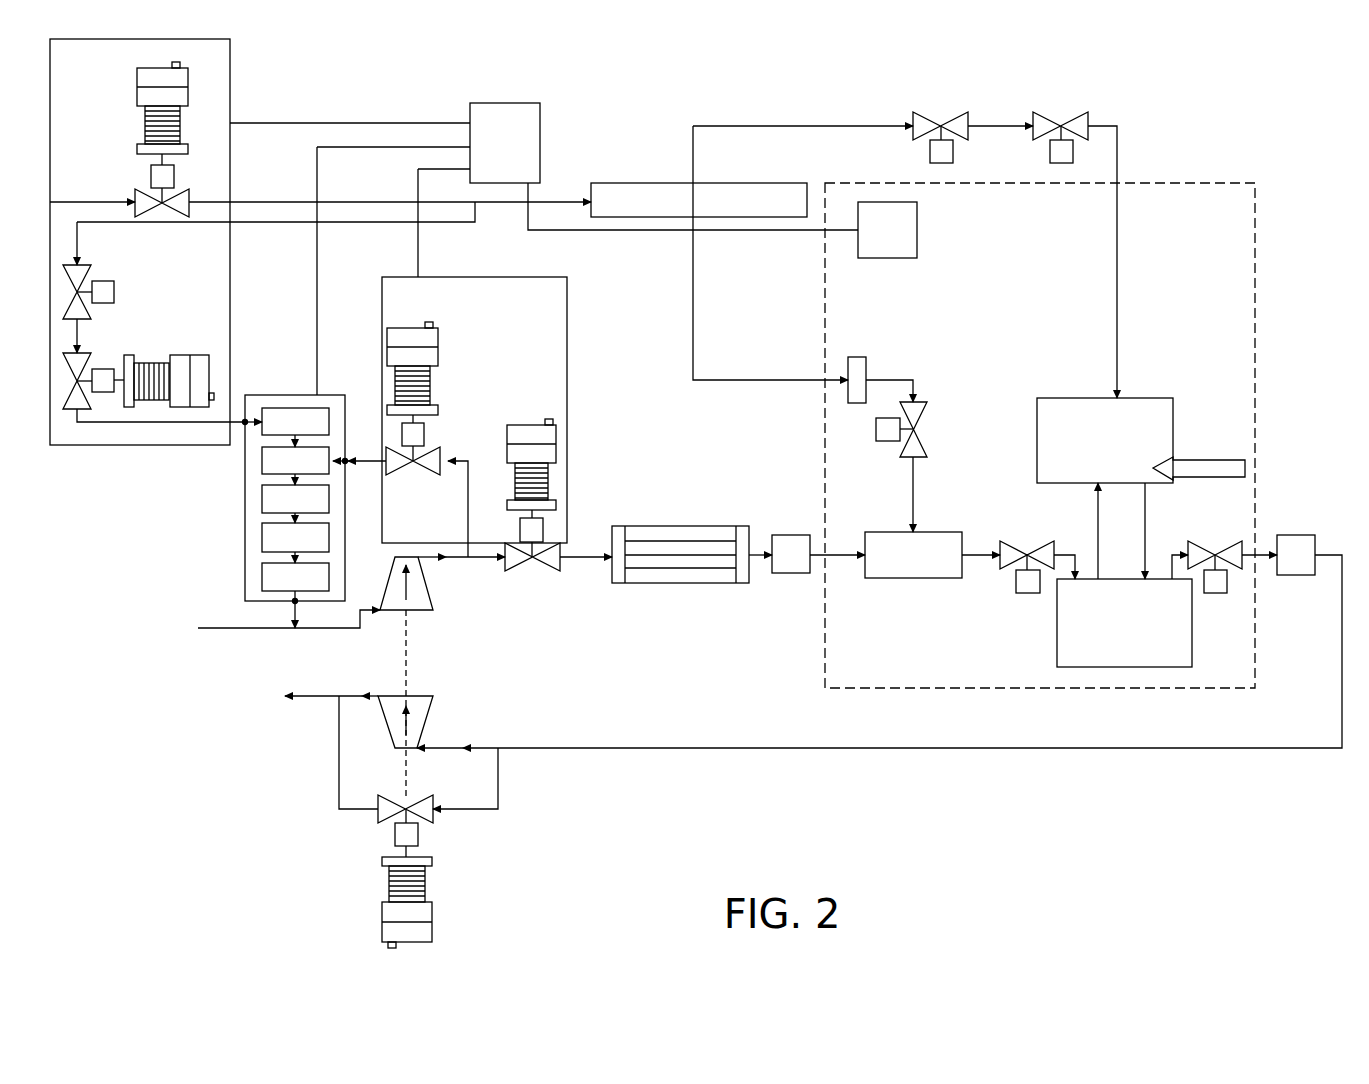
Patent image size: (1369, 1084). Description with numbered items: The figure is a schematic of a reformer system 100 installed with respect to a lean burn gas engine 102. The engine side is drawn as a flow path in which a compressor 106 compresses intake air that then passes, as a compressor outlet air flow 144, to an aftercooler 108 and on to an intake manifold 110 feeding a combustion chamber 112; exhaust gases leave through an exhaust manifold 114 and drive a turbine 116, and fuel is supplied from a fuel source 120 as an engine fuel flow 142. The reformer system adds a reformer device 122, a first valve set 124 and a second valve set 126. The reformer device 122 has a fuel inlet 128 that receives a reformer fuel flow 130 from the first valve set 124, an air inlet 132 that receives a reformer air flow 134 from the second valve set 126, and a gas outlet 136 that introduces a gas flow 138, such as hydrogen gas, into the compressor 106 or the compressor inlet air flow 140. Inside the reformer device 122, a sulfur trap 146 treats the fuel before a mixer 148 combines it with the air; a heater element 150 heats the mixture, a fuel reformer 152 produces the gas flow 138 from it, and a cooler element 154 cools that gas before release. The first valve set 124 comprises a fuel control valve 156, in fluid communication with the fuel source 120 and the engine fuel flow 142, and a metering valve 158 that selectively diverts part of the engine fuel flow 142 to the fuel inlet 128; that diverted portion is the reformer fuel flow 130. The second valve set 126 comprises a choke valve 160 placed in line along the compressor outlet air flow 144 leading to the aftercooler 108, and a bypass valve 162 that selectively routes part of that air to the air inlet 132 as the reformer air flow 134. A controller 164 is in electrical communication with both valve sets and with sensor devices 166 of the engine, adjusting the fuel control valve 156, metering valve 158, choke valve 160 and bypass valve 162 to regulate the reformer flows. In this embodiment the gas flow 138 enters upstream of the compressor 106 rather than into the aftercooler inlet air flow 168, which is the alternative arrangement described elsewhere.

The reformer system 100 is at (168, 550).
The lean burn gas engine 102 is at (1218, 82).
The compressor 106 is at (398, 612).
The aftercooler 108 is at (680, 526).
The intake manifold 110 is at (790, 573).
The combustion chamber 112 is at (1170, 183).
The exhaust manifold 114 is at (1295, 535).
The turbine 116 is at (425, 696).
The fuel source 120 is at (662, 183).
The reformer device 122 is at (276, 498).
The first valve set 124 is at (230, 58).
The second valve set 126 is at (567, 340).
The fuel inlet 128 is at (245, 422).
The reformer fuel flow 130 is at (137, 422).
The air inlet 132 is at (345, 461).
The reformer air flow 134 is at (345, 460).
The gas outlet 136 is at (290, 603).
The gas flow 138 is at (298, 606).
The compressor inlet air flow 140 is at (290, 630).
The engine fuel flow 142 is at (240, 202).
The compressor outlet air flow 144 is at (468, 560).
The sulfur trap 146 is at (295, 421).
The mixer 148 is at (295, 460).
The heater element 150 is at (295, 499).
The fuel reformer 152 is at (295, 537).
The cooler element 154 is at (245, 545).
The fuel control valve 156 is at (137, 80).
The metering valve 158 is at (185, 355).
The choke valve 160 is at (532, 425).
The bypass valve 162 is at (418, 328).
The controller 164 is at (505, 143).
The sensor devices 166 is at (917, 230).
The aftercooler inlet air flow 168 is at (585, 560).